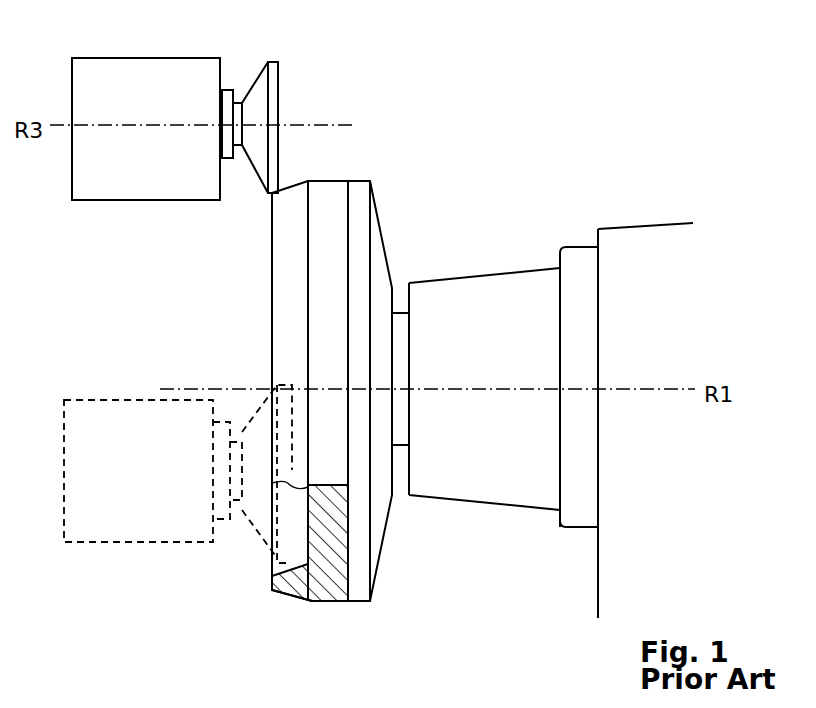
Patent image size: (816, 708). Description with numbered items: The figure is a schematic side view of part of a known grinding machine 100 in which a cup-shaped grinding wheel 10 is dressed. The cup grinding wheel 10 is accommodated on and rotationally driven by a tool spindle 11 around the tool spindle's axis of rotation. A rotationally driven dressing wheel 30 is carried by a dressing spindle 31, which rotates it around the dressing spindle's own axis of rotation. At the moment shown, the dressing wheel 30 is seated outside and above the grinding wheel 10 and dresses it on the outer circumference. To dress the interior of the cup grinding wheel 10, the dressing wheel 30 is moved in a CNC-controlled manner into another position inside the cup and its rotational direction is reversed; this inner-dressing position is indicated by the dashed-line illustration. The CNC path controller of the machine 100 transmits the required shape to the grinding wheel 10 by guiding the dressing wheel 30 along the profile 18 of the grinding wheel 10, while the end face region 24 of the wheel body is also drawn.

The grinding machine 100 is at (610, 29).
The cup grinding wheel 10 is at (399, 188).
The tool spindle 11 is at (506, 495).
The profile 18 is at (273, 592).
The chuck body end face 24 is at (372, 592).
The dressing wheel 30 is at (273, 63).
The dressing spindle 31 is at (226, 88).